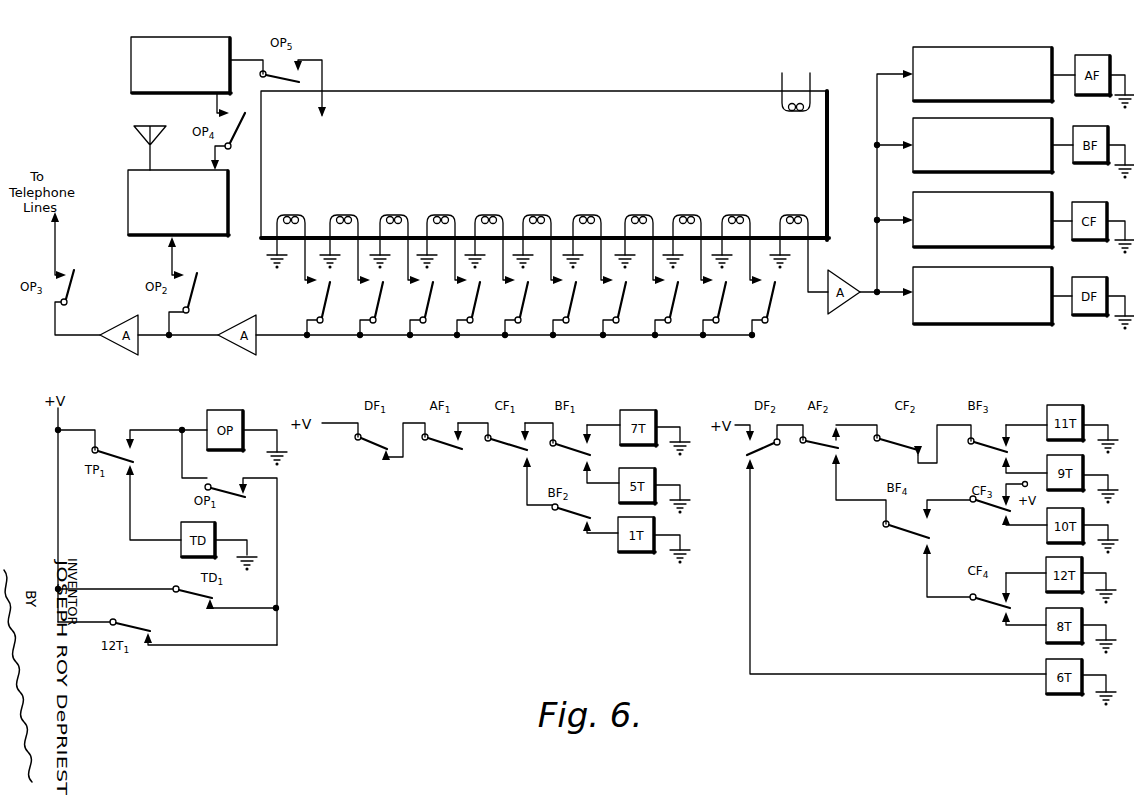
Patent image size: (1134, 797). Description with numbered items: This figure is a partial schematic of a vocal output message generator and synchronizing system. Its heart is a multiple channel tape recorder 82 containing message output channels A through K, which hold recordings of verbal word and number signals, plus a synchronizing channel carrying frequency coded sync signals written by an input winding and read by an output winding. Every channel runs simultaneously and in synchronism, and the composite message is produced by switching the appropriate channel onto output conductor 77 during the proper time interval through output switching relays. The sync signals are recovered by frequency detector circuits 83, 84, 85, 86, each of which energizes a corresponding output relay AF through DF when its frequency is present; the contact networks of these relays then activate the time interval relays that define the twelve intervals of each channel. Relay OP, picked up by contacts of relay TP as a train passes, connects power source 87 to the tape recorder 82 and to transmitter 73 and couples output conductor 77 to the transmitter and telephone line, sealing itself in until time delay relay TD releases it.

The power source 87 is at (176, 12).
The transmitter 73 is at (128, 177).
The multiple channel tape recorder 82 is at (512, 91).
The output conductor 77 is at (278, 335).
The frequency detector circuit 83 is at (990, 31).
The frequency detector circuit 84 is at (1052, 126).
The frequency detector circuit 85 is at (1052, 197).
The frequency detector circuit 86 is at (1052, 274).